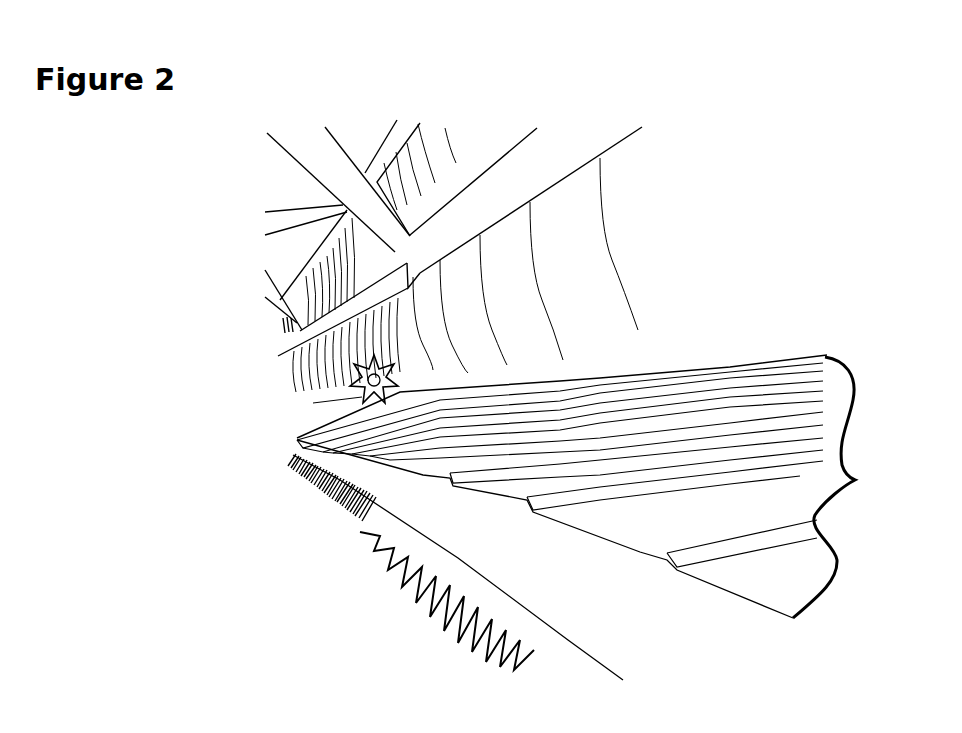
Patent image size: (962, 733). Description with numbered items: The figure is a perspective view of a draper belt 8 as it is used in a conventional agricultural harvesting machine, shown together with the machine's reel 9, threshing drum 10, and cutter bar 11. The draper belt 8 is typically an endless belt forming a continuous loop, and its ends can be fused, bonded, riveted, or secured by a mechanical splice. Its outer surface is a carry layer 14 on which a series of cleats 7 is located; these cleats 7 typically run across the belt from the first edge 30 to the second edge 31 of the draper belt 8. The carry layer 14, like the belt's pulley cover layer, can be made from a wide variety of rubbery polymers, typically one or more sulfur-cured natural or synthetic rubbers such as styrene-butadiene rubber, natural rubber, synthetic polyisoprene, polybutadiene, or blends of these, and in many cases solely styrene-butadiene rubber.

The cleats 7 is at (695, 428).
The draper belt 8 is at (850, 482).
The reel 9 is at (560, 162).
The threshing drum 10 is at (362, 397).
The cutter bar 11 is at (540, 640).
The carry layer 14 is at (740, 380).
The first edge 30 is at (423, 475).
The second edge 31 is at (573, 378).